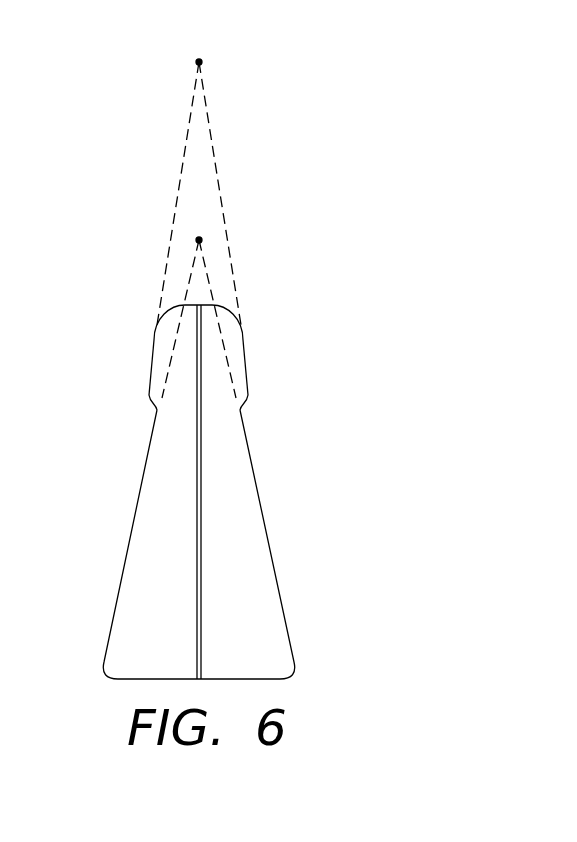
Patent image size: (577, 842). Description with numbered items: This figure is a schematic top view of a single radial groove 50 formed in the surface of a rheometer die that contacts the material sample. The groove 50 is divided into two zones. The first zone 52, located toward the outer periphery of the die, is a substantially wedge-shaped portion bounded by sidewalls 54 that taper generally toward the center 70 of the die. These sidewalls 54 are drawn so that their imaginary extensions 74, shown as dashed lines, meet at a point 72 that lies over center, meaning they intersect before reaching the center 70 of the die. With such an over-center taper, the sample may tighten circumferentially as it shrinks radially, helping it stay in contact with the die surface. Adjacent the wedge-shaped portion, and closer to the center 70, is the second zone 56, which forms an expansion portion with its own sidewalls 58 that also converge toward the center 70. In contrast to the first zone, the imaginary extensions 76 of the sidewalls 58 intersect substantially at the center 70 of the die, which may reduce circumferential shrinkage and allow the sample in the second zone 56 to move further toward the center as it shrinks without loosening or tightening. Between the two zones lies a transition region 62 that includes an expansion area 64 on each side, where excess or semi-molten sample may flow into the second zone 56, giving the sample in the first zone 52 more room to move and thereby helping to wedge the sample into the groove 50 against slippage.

The radial groove 50 is at (130, 232).
The first zone 52 is at (255, 492).
The sidewalls of first zone 54 is at (133, 531).
The second zone 56 is at (252, 373).
The sidewalls of second zone 58 is at (155, 358).
The transition region 62 is at (155, 410).
The expansion area 64 is at (149, 396).
The center of the die 70 is at (203, 61).
The intersection point 72 is at (202, 239).
The imaginary extensions of first zone sidewalls 74 is at (188, 288).
The imaginary extensions of second zone sidewalls 76 is at (183, 163).